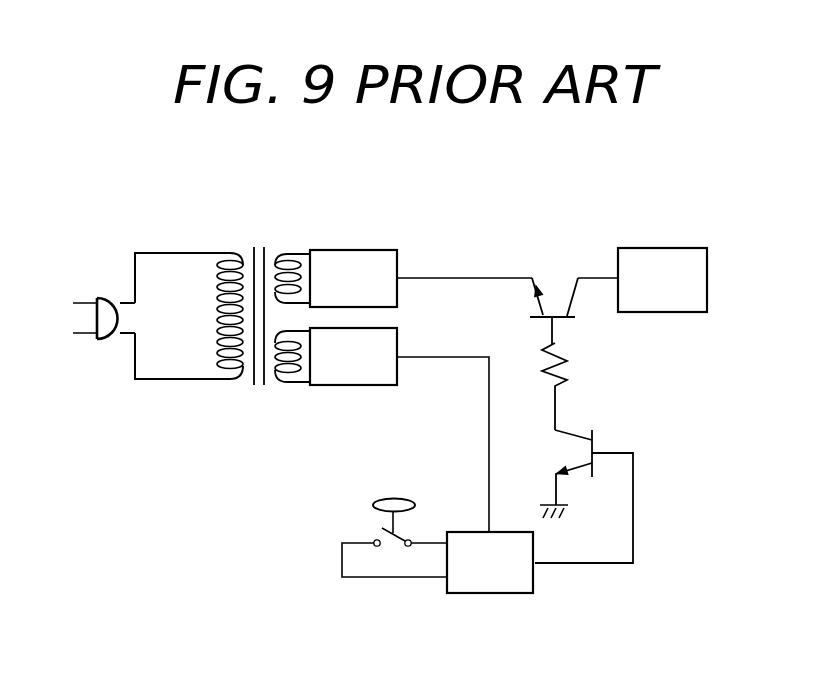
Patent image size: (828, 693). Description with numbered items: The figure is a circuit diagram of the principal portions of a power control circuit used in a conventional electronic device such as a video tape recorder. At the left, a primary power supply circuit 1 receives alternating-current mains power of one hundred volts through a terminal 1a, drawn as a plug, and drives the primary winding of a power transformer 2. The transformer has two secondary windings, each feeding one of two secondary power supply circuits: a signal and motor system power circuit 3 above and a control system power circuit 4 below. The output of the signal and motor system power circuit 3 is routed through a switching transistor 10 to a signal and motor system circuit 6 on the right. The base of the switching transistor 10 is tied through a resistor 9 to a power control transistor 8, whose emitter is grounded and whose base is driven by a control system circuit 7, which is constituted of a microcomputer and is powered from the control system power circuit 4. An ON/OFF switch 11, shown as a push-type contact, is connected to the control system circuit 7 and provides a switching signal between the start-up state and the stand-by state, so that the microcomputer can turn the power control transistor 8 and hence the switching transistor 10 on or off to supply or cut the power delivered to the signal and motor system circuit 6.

The primary power supply circuit 1 is at (155, 246).
The terminal 1a is at (105, 297).
The power transformer 2 is at (254, 250).
The signal and motor system power circuit 3 is at (348, 255).
The control system power circuit 4 is at (383, 368).
The signal and motor system circuit 6 is at (655, 268).
The control system circuit 7 is at (538, 580).
The power control transistor 8 is at (595, 437).
The resistor 9 is at (570, 363).
The switching transistor 10 is at (573, 288).
The ON/OFF switch 11 is at (396, 497).